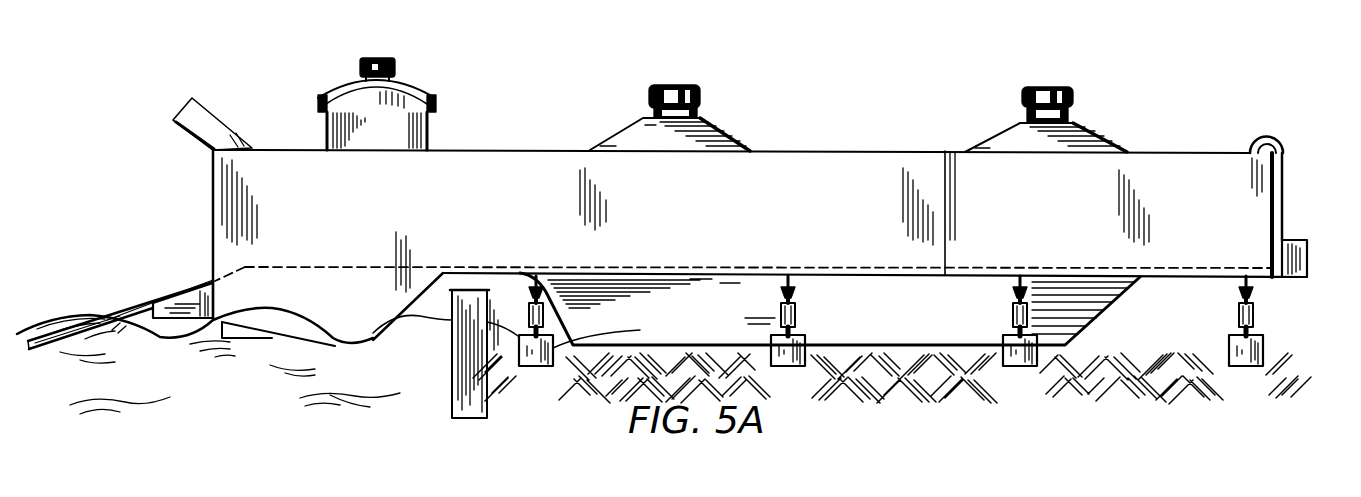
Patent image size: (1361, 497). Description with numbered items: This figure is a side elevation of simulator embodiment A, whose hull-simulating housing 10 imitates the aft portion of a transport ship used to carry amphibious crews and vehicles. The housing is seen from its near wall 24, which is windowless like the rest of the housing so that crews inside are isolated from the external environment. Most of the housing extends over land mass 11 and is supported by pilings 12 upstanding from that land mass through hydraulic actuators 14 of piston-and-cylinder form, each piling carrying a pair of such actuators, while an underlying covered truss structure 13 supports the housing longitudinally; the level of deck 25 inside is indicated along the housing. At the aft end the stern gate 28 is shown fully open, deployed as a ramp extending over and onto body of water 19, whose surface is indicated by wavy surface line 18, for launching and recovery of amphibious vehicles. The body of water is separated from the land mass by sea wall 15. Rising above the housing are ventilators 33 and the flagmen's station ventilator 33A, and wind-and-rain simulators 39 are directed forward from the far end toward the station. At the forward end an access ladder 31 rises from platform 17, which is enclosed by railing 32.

The housing 10 is at (492, 144).
The land mass 11 is at (985, 433).
The pilings 12 is at (770, 352).
The truss structure 13 is at (308, 340).
The hydraulic actuators 14 is at (1013, 318).
The sea wall 15 is at (446, 388).
The platform 17 is at (1297, 277).
The wavy surface line 18 is at (58, 314).
The body of water 19 is at (192, 395).
The near wall 24 is at (817, 167).
The deck 25 is at (764, 270).
The stern gate 28 is at (181, 296).
The access ladder 31 is at (1270, 138).
The railing 32 is at (1291, 240).
The ventilators 33 is at (685, 84).
The ventilator 33A is at (395, 63).
The wind-and-rain simulators 39 is at (180, 108).
The simulator embodiment A is at (251, 104).